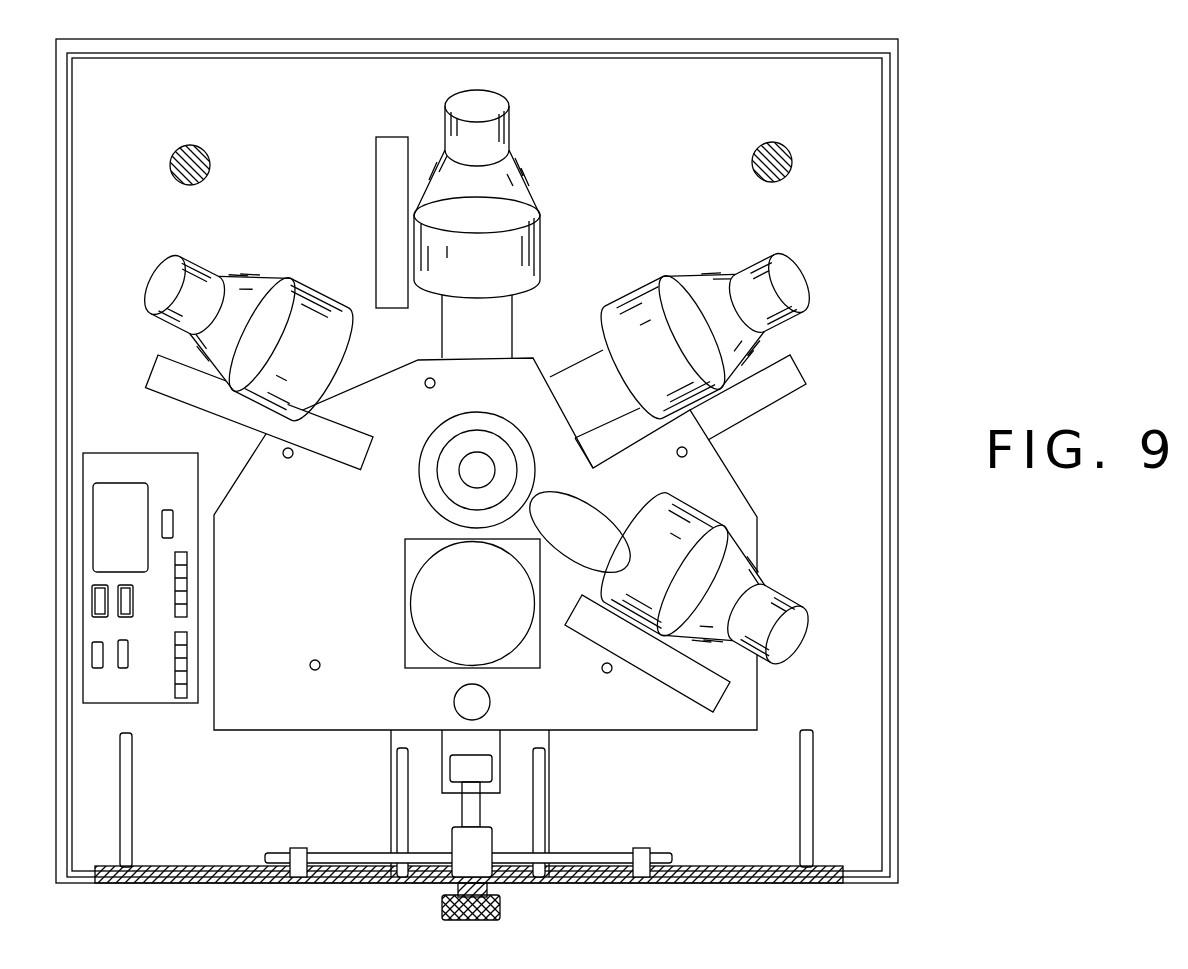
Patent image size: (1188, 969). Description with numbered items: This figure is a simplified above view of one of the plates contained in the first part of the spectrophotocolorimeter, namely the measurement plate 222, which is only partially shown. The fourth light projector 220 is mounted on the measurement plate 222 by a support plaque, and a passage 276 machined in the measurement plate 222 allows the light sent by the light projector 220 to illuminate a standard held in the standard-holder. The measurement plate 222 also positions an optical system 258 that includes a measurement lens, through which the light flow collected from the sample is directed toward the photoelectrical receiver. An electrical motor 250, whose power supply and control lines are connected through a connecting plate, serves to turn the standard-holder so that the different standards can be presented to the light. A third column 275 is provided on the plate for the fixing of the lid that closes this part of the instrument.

The measurement plate 222 is at (518, 392).
The fourth light projector 220 is at (806, 628).
The electrical motor 250 is at (423, 598).
The optical system 258 is at (426, 484).
The third column 275 is at (453, 708).
The passage 276 is at (582, 517).